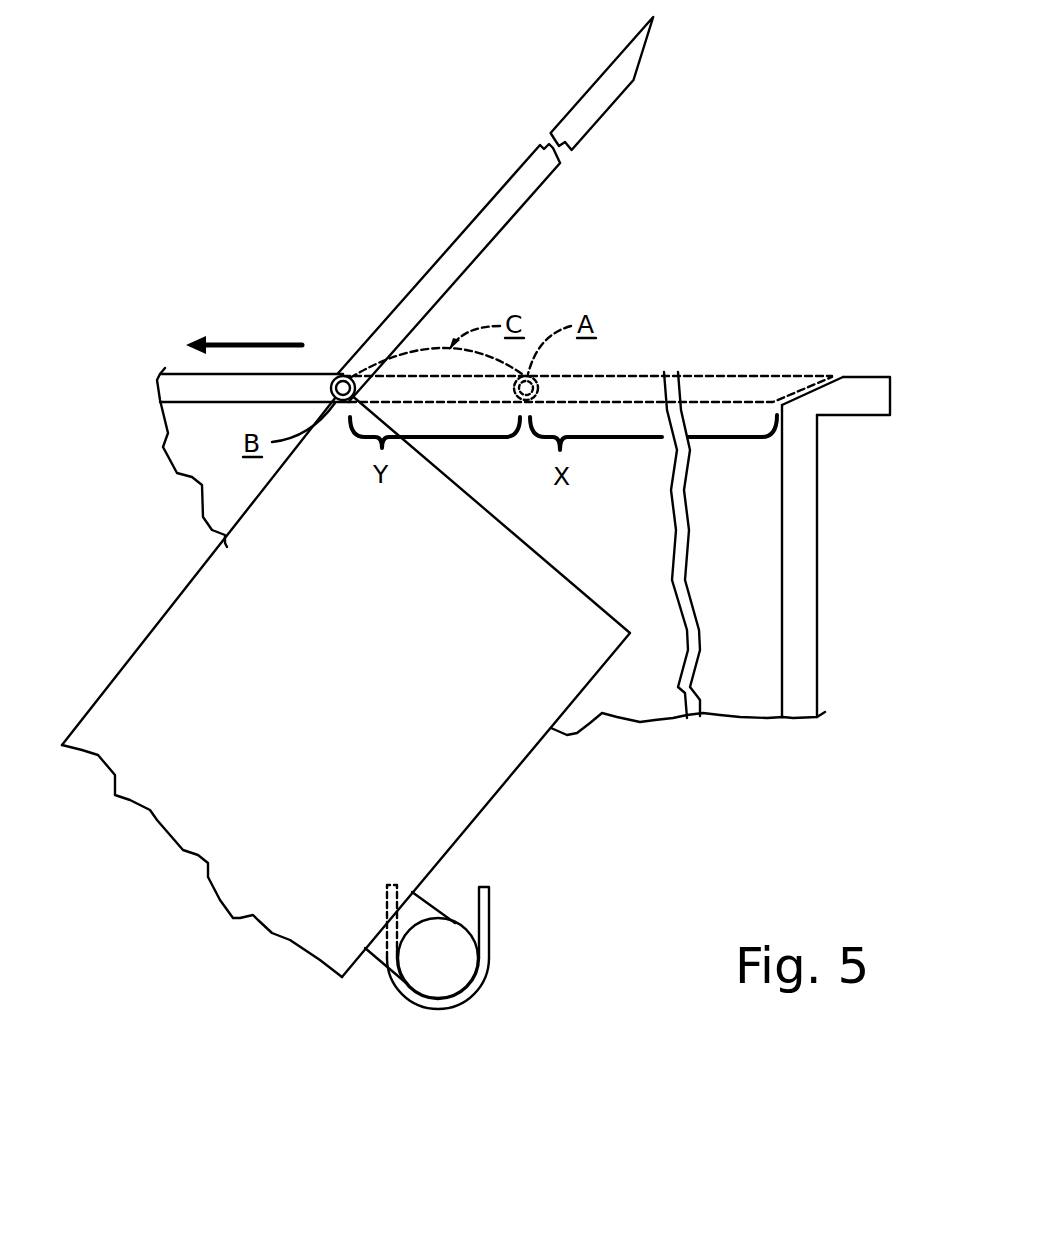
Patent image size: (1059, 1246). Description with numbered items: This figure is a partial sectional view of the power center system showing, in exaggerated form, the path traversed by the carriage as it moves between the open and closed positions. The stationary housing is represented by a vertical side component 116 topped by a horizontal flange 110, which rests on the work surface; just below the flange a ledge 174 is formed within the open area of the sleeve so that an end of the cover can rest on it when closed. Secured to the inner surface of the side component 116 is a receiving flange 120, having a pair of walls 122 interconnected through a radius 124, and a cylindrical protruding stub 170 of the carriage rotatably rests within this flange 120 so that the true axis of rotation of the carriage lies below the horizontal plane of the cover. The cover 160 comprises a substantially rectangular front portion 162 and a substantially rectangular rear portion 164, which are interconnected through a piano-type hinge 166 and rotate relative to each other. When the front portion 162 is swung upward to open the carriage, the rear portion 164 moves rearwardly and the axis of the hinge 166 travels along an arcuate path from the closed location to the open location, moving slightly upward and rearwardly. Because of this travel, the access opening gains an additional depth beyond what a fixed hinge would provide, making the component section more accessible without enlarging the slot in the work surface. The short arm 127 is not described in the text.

The horizontal flange 110 is at (862, 377).
The vertical side component 116 is at (800, 500).
The receiving flange 120 is at (372, 1002).
The wall 122 is at (387, 910).
The radius 124 is at (438, 1010).
The hook arm 127 is at (492, 922).
The cover 160 is at (527, 297).
The front portion 162 is at (517, 227).
The rear portion 164 is at (243, 388).
The piano-type hinge 166 is at (336, 376).
The protruding stub 170 is at (443, 957).
The ledge 174 is at (815, 378).